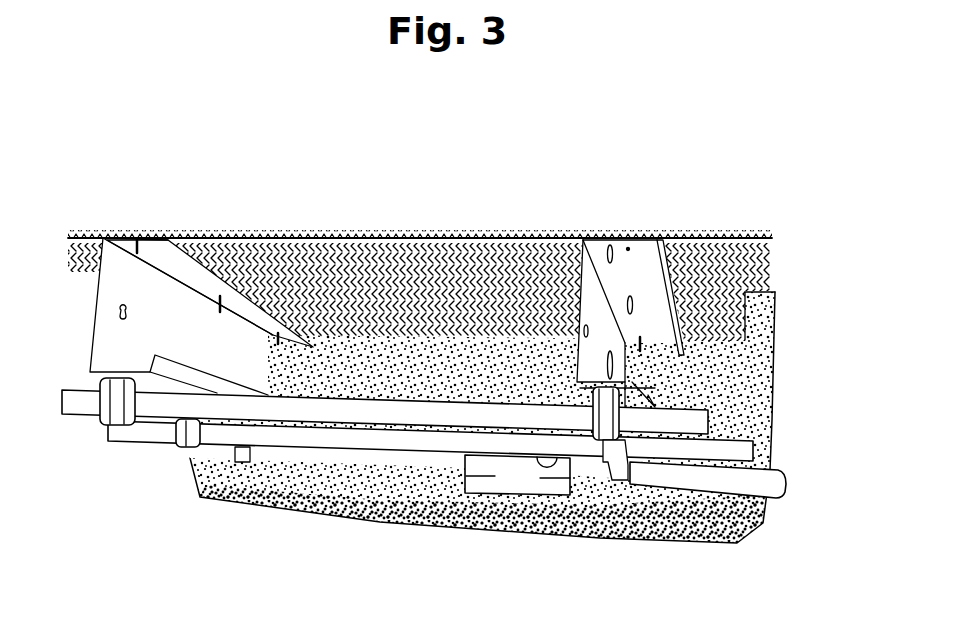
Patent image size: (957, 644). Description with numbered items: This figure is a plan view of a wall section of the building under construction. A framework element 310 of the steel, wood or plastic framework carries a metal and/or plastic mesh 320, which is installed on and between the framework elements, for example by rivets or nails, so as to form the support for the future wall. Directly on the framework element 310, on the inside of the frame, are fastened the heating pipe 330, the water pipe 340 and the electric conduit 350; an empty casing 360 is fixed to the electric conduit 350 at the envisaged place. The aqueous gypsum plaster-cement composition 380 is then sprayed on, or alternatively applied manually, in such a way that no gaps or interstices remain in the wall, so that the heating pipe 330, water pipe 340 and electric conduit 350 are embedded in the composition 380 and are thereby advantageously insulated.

The framework element 310 is at (140, 283).
The metal and/or plastic mesh 320 is at (418, 235).
The heating pipe 330 is at (710, 418).
The water pipe 340 is at (145, 445).
The electric conduit 350 is at (730, 483).
The empty casing 360 is at (535, 500).
The aqueous gypsum plaster-cement composition 380 is at (350, 503).